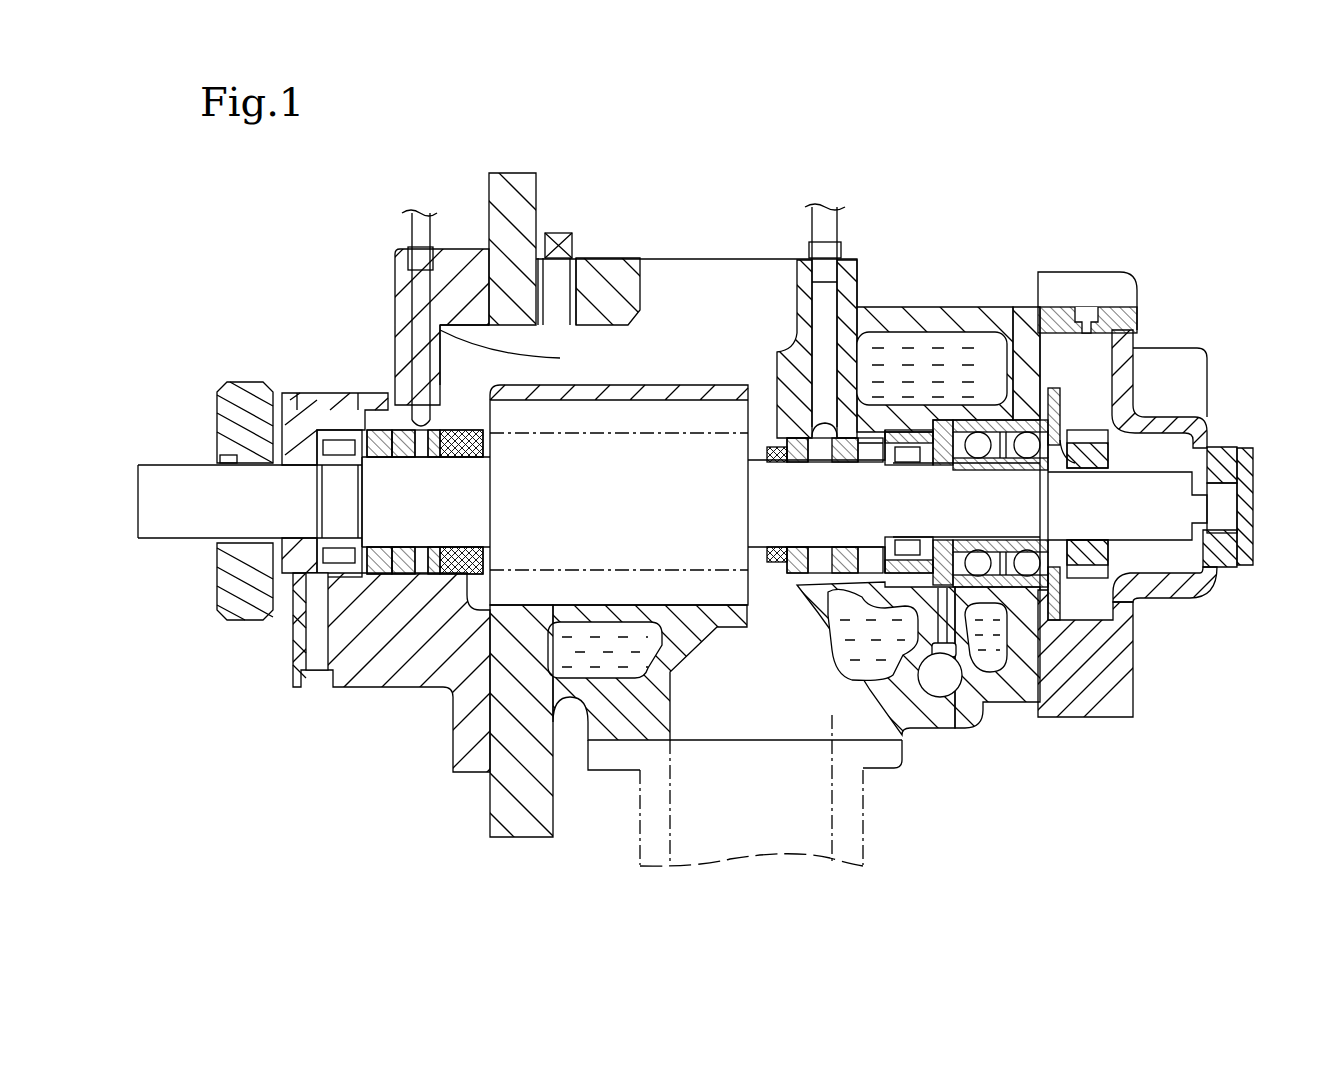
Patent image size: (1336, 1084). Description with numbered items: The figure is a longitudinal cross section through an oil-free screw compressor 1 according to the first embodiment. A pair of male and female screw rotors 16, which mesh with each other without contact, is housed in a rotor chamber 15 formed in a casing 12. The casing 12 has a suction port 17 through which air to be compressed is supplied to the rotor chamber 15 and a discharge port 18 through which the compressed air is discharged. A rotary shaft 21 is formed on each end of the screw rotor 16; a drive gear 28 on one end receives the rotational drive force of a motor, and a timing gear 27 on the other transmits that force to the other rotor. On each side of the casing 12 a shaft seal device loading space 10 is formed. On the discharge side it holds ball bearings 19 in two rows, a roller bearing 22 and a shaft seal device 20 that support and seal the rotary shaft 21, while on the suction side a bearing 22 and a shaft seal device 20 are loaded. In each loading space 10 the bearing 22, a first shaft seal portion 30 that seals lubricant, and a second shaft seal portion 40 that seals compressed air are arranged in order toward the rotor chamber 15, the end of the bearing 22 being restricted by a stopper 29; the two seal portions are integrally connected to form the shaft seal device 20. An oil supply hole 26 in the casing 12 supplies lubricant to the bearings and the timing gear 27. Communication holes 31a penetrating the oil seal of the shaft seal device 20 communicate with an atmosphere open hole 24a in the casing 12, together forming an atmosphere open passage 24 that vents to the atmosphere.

The oil-free screw compressor 1 is at (668, 542).
The shaft seal device loading space 10 is at (375, 427).
The casing 12 is at (920, 310).
The rotor chamber 15 is at (672, 390).
The screw rotor 16 is at (453, 715).
The suction port 17 is at (555, 357).
The discharge port 18 is at (772, 612).
The ball bearing 19 is at (1024, 432).
The shaft seal device 20 is at (641, 614).
The rotary shaft 21 is at (213, 515).
The bearing 22 is at (299, 618).
The atmosphere open passage 24 is at (425, 288).
The atmosphere open hole 24a is at (420, 303).
The oil supply hole 26 is at (972, 700).
The timing gear 27 is at (1090, 575).
The drive gear 28 is at (245, 400).
The stopper 29 is at (940, 432).
The first shaft seal portion 30 is at (380, 576).
The communication hole 31a is at (808, 558).
The second shaft seal portion 40 is at (450, 581).